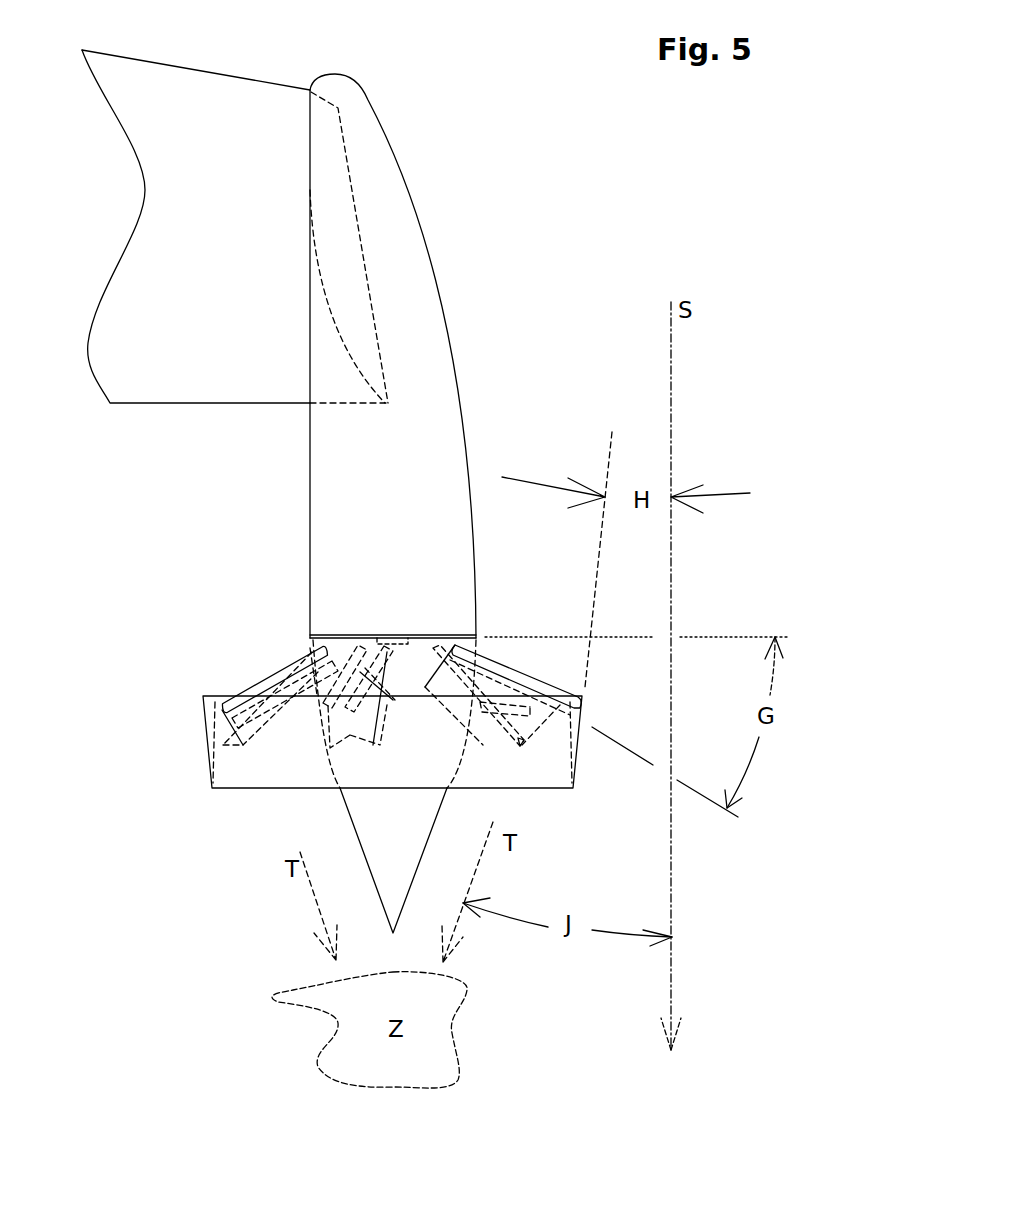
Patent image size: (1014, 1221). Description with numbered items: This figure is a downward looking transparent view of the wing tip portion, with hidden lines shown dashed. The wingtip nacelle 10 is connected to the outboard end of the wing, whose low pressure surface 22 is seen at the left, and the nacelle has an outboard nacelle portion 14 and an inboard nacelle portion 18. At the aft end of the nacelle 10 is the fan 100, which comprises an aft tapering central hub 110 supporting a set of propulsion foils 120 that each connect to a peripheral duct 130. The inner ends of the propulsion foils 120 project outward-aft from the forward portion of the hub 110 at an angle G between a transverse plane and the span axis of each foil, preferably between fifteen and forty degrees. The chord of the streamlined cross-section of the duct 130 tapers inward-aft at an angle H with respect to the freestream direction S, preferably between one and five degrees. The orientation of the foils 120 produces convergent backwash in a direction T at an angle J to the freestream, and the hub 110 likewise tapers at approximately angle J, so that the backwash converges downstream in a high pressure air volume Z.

The wingtip nacelle 10 is at (370, 347).
The outboard nacelle portion 14 is at (500, 302).
The inboard nacelle portion 18 is at (310, 499).
The low pressure surface 22 is at (223, 361).
The fan 100 is at (307, 770).
The central hub 110 is at (343, 800).
The propulsion foils 120 is at (272, 668).
The peripheral duct 130 is at (280, 790).